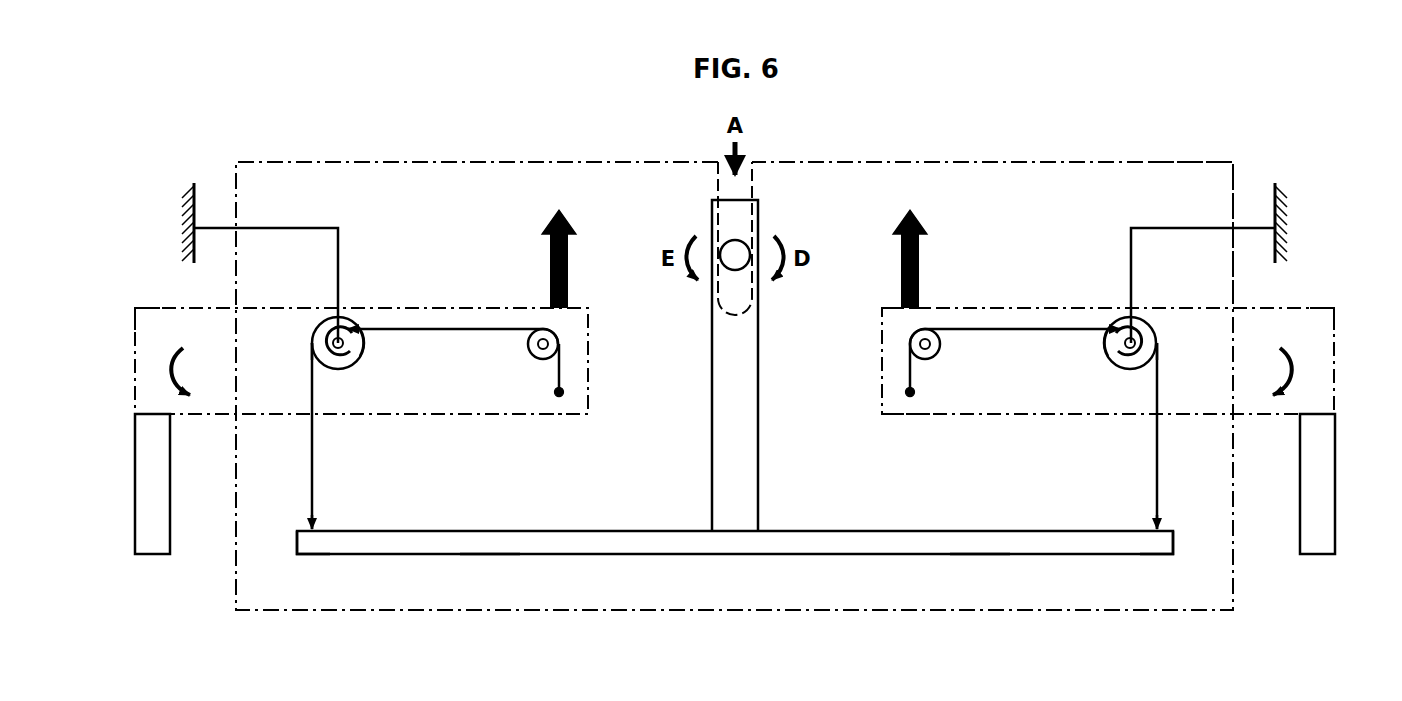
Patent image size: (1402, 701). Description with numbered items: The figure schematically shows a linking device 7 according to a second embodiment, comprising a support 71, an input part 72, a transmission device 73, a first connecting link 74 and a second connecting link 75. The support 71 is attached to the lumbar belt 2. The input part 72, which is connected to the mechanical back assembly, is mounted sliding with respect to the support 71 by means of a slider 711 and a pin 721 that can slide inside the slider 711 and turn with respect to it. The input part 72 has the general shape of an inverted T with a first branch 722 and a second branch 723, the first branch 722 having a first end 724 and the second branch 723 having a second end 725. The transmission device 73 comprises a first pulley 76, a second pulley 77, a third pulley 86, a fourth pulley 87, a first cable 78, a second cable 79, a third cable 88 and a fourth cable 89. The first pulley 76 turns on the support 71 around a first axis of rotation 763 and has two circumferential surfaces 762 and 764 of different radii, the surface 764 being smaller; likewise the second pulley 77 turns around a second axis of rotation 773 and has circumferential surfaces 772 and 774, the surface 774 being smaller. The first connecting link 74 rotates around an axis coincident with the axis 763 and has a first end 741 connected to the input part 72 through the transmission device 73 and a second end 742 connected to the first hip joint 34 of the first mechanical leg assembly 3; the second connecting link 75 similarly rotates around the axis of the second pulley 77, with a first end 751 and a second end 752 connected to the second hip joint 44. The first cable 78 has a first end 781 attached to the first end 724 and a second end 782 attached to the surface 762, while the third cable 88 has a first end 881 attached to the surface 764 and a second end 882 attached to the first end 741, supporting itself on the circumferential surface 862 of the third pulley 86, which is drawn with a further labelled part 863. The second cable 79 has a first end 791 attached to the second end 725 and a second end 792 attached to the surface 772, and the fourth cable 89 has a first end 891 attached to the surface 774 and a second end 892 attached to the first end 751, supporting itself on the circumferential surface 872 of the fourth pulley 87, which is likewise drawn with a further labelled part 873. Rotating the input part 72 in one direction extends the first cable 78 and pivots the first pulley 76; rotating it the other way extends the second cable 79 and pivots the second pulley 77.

The linking device 7 is at (297, 114).
The support 71 is at (1205, 180).
The slider 711 is at (745, 300).
The input part 72 is at (866, 558).
The pin 721 is at (745, 262).
The first branch 722 is at (982, 546).
The second branch 723 is at (487, 546).
The first end 724 is at (1158, 546).
The second end 725 is at (312, 546).
The transmission device 73 is at (494, 287).
The first connecting link 74 is at (1005, 418).
The first end 741 is at (910, 406).
The second end 742 is at (1320, 320).
The second connecting link 75 is at (461, 418).
The first end 751 is at (560, 406).
The second end 752 is at (150, 320).
The first pulley 76 is at (1127, 373).
The circumferential surface 762 is at (1102, 346).
The first axis of rotation 763 is at (1133, 343).
The circumferential surface 764 is at (1140, 322).
The second pulley 77 is at (341, 373).
The circumferential surface 772 is at (366, 346).
The second axis of rotation 773 is at (336, 343).
The circumferential surface 774 is at (330, 322).
The first cable 78 is at (1155, 483).
The first end 781 is at (1161, 522).
The second end 782 is at (1159, 356).
The second cable 79 is at (314, 483).
The first end 791 is at (308, 522).
The second end 792 is at (311, 356).
The third pulley 86 is at (941, 363).
The circumferential surface 862 is at (940, 345).
The right idler rim 863 is at (908, 331).
The fourth pulley 87 is at (529, 363).
The circumferential surface 872 is at (530, 345).
The left idler rim 873 is at (560, 331).
The third cable 88 is at (1040, 327).
The first end 881 is at (1121, 324).
The second end 882 is at (906, 392).
The fourth cable 89 is at (430, 327).
The first end 891 is at (349, 324).
The second end 892 is at (563, 392).
The lumbar belt 2 is at (201, 206).
The first mechanical leg assembly 3 is at (132, 482).
The first hip joint 34 is at (1129, 379).
The second hip joint 44 is at (341, 379).